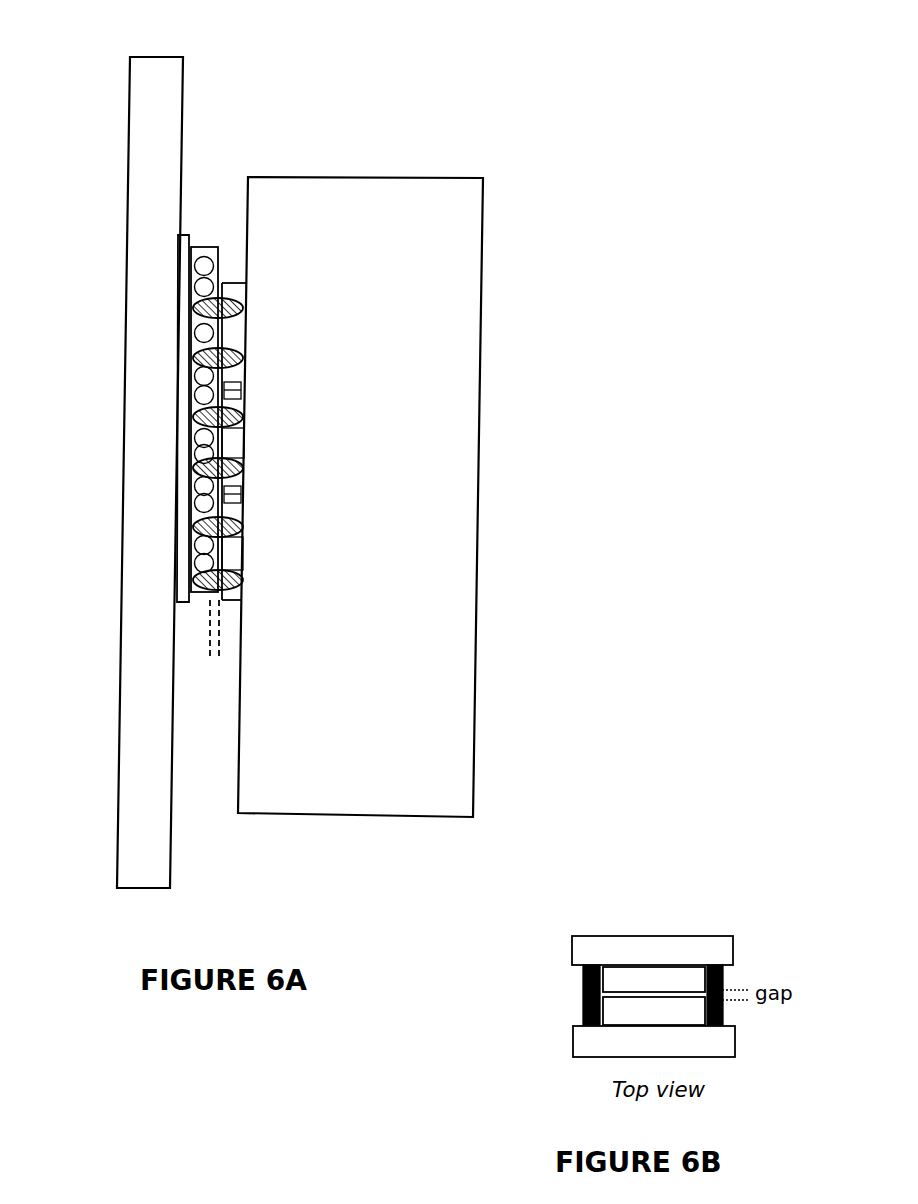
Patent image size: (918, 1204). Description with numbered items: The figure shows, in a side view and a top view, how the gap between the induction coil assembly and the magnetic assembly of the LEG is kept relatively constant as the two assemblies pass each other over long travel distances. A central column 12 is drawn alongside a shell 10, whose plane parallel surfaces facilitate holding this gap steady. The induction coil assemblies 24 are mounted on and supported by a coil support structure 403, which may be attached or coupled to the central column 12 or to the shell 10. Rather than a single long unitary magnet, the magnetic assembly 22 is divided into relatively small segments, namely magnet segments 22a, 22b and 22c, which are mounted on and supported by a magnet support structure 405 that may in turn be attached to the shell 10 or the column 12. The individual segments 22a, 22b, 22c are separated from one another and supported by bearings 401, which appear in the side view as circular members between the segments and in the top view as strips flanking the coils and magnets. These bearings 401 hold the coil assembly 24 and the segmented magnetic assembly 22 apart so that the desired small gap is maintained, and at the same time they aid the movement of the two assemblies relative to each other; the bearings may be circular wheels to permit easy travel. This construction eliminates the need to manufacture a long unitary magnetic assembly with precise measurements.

In FIG. 6A, the shell 10 is at (380, 177).
In FIG. 6A, the central column 12 is at (162, 55).
In FIG. 6B, the magnetic assembly 22 is at (697, 1013).
In FIG. 6A, the magnet segment 22a is at (230, 545).
In FIG. 6A, the magnet segment 22b is at (230, 443).
In FIG. 6A, the magnet segment 22c is at (230, 331).
In FIG. 6A, the induction coil assembly 24 is at (188, 397).
In FIG. 6B, the induction coil assembly 24 is at (693, 982).
In FIG. 6A, the bearing 401 is at (243, 303).
In FIG. 6B, the bearing 401 is at (583, 998).
In FIG. 6A, the coil support structure 403 is at (183, 280).
In FIG. 6B, the coil support structure 403 is at (727, 953).
In FIG. 6A, the magnet support structure 405 is at (248, 597).
In FIG. 6B, the magnet support structure 405 is at (715, 1043).